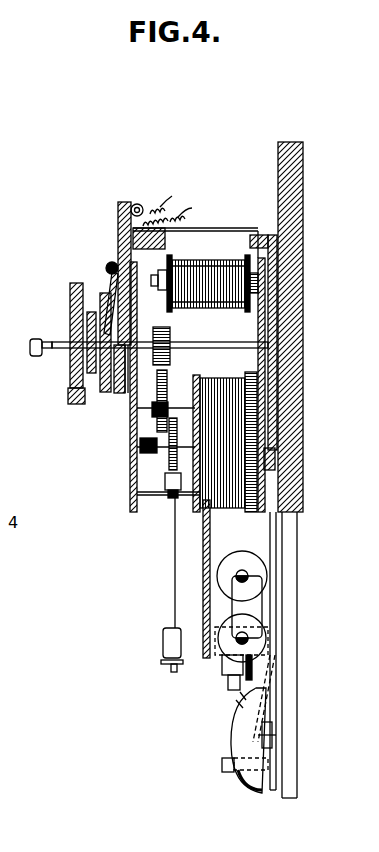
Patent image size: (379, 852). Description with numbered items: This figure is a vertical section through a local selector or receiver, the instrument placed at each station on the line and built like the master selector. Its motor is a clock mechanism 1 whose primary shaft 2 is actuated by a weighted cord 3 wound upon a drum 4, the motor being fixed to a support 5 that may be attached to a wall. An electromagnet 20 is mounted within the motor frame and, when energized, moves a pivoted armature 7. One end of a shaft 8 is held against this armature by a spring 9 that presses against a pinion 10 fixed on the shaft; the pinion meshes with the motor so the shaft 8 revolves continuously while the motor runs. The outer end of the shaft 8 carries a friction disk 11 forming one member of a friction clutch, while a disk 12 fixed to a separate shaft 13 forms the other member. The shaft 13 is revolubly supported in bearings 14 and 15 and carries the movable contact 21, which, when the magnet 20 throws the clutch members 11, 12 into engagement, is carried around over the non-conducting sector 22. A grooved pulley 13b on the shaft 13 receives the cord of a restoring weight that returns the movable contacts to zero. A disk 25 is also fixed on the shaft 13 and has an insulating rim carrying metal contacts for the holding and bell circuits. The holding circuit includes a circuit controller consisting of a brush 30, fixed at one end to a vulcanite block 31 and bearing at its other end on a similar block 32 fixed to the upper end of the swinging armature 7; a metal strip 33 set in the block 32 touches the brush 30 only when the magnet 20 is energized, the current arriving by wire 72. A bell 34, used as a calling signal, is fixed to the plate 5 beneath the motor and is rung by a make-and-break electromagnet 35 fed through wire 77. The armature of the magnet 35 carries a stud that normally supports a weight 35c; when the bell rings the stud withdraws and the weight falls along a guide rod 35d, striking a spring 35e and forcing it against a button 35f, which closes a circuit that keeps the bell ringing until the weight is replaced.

The clock mechanism 1 is at (130, 486).
The primary shaft 2 is at (130, 455).
The weighted cord 3 is at (203, 545).
The drum 4 is at (222, 508).
The support 5 is at (290, 521).
The armature 7 is at (270, 383).
The shaft 8 is at (207, 348).
The spring 9 is at (155, 398).
The pinion 10 is at (170, 352).
The friction disk 11 is at (122, 395).
The disk 12 is at (110, 393).
The shaft 13 is at (70, 360).
The grooved pulley 13b is at (90, 312).
The bearing 14 is at (100, 392).
The bearing 15 is at (62, 340).
The electromagnet 20 is at (200, 310).
The movable contact 21 is at (108, 292).
The non-conducting sector 22 is at (118, 215).
The disk 25 is at (72, 400).
The brush 30 is at (220, 228).
The vulcanite block 31 is at (166, 241).
The block 32 is at (288, 225).
The metal strip 33 is at (260, 235).
The bell 34 is at (248, 790).
The bell electromagnet 35 is at (248, 562).
The weight 35c is at (230, 678).
The guide rod 35d is at (236, 700).
The spring 35e is at (268, 676).
The button 35f is at (274, 728).
The wire 72 is at (189, 209).
The wire 77 is at (167, 201).